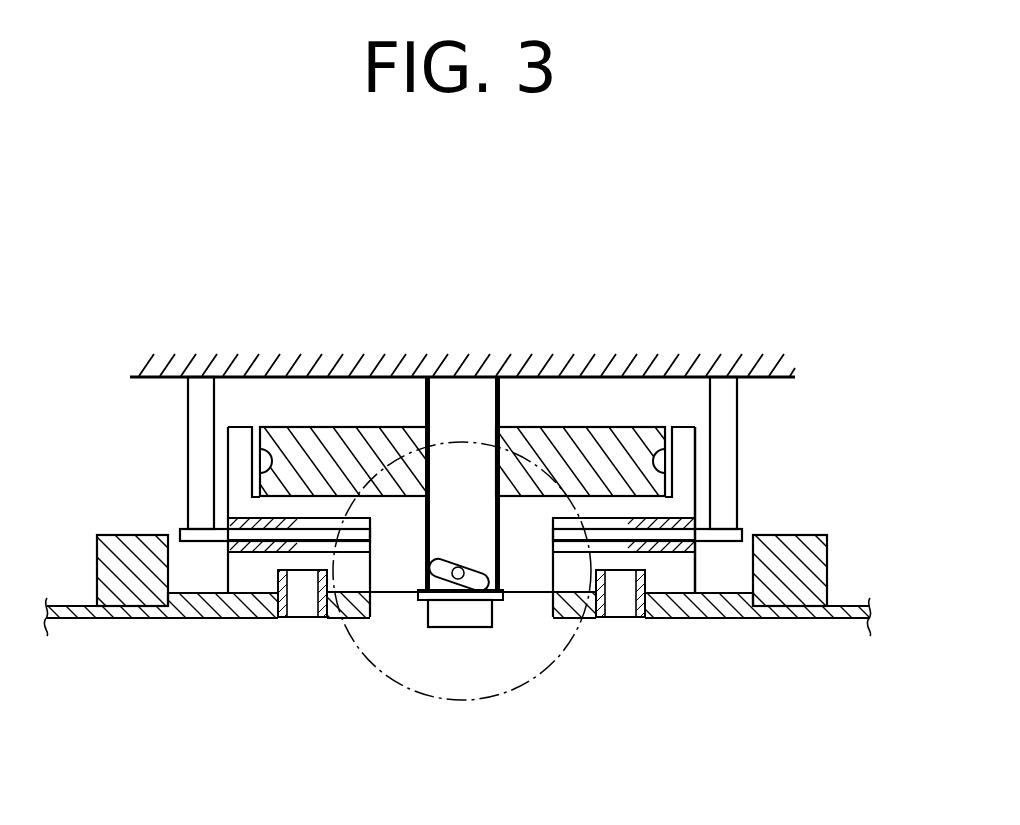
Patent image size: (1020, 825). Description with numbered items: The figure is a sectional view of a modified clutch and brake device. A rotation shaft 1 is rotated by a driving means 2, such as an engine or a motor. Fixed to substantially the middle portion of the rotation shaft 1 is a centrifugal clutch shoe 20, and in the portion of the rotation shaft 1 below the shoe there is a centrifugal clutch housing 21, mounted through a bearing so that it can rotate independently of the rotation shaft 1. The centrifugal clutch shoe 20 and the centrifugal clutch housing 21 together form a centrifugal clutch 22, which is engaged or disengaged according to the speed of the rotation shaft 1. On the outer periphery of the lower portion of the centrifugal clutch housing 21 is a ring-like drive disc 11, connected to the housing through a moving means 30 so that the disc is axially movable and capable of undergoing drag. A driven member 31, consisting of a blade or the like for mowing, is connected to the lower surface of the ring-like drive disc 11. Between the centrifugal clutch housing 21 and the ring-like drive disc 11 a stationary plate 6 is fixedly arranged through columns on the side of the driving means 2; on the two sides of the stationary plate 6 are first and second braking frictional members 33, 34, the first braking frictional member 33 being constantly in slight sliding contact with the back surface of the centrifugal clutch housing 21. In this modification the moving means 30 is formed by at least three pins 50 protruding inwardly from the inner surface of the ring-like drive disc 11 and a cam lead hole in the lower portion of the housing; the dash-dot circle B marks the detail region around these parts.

The rotation shaft 1 is at (466, 390).
The driving means 2 is at (250, 375).
The stationary plate 6 is at (741, 528).
The ring-like drive disc 11 is at (670, 578).
The centrifugal clutch shoe 20 is at (592, 440).
The centrifugal clutch housing 21 is at (685, 435).
The centrifugal clutch 22 is at (716, 443).
The moving means 30 is at (448, 588).
The driven member 31 is at (133, 620).
The first braking frictional member 33 is at (694, 520).
The second braking frictional member 34 is at (700, 551).
The pins 50 is at (487, 587).
The detail region B is at (368, 662).